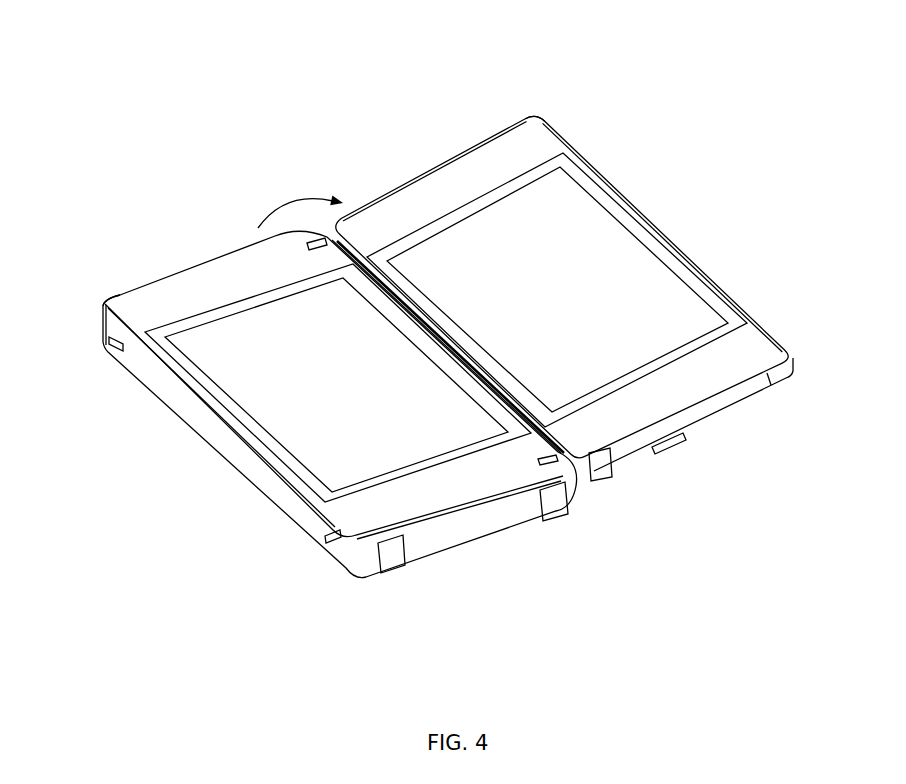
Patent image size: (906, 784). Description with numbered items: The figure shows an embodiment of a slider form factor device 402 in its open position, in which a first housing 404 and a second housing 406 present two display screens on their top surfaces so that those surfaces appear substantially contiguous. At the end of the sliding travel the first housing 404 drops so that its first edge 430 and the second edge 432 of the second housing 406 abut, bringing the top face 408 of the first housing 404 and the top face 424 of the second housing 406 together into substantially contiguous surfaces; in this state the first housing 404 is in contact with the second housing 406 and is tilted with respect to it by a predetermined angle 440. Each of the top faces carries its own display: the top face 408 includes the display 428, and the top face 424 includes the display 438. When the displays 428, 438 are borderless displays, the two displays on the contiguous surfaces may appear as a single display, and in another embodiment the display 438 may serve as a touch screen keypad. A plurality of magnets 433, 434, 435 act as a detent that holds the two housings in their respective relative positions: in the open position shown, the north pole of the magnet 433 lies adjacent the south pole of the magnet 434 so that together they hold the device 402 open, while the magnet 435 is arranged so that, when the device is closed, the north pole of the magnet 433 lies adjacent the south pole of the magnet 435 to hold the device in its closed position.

The slider device 402 is at (736, 61).
The first housing 404 is at (427, 173).
The second housing 406 is at (227, 252).
The top face of the first housing 408 is at (513, 137).
The top face of the second housing 424 is at (123, 297).
The display 428 is at (567, 208).
The display 438 is at (248, 387).
The first edge 430 is at (558, 446).
The second edge 432 is at (560, 450).
The magnet 433 is at (602, 475).
The magnet 434 is at (553, 516).
The magnet 435 is at (387, 567).
The predetermined angle 440 is at (297, 198).